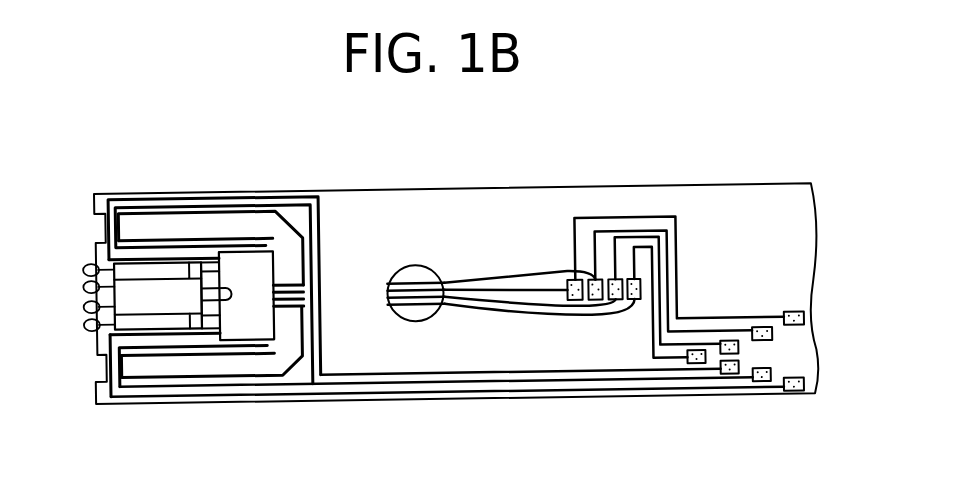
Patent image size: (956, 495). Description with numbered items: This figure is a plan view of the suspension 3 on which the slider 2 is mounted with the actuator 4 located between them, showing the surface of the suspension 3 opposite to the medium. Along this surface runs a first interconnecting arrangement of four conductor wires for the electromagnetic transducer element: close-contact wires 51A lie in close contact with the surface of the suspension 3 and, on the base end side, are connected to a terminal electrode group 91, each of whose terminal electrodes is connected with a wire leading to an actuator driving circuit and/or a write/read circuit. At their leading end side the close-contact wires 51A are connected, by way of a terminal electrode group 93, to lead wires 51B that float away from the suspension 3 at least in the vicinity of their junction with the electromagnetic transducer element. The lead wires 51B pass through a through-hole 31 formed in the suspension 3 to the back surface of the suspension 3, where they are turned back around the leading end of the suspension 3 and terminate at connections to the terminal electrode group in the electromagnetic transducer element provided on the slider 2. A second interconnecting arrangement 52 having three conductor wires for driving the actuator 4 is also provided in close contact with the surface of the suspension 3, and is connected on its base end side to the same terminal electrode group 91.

The slider 2 is at (127, 297).
The suspension 3 is at (731, 202).
The connector 4 is at (245, 281).
The through-hole 31 is at (405, 282).
The close-contact wires 51A is at (642, 257).
The lead wires 51B is at (556, 287).
The second interconnecting arrangement 52 is at (549, 397).
The terminal electrode group 91 is at (802, 407).
The terminal electrode group 93 is at (633, 307).